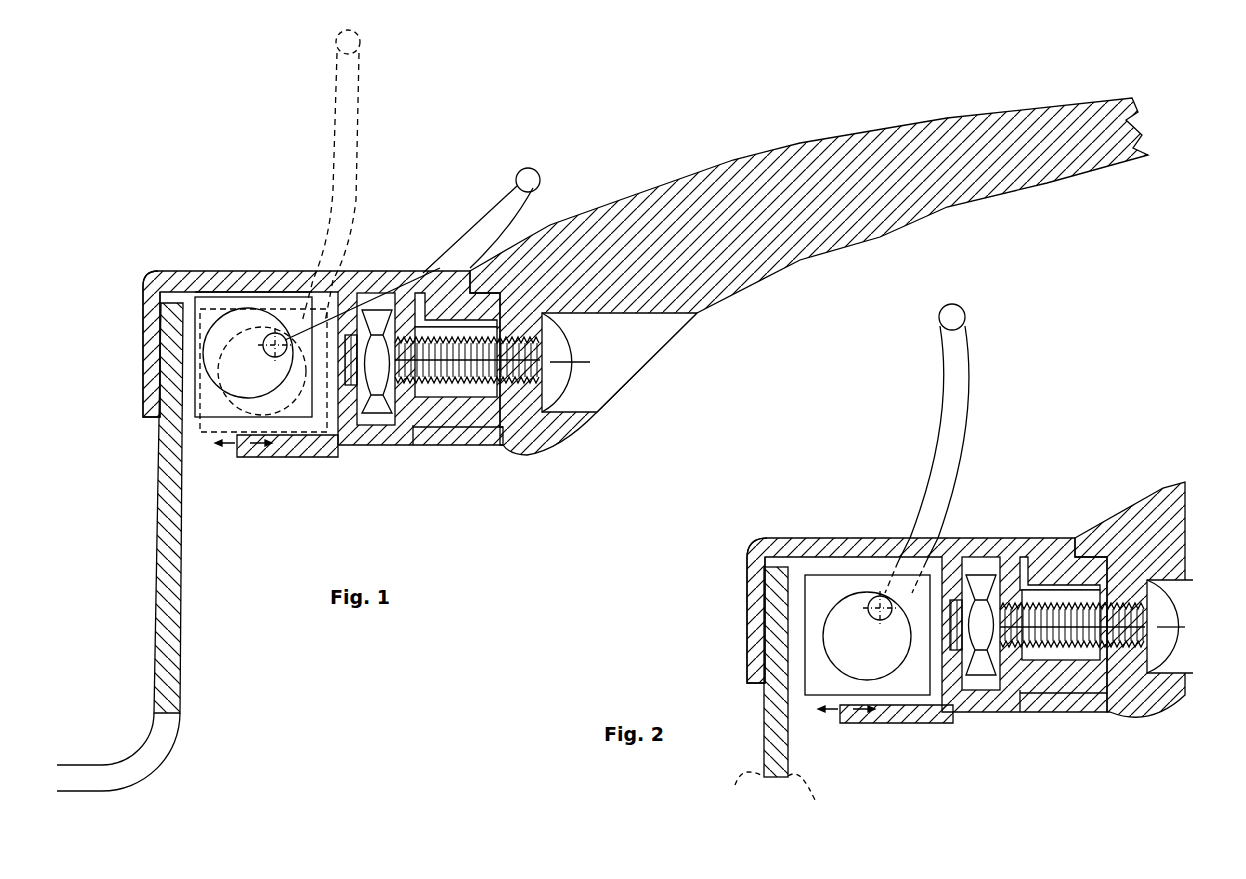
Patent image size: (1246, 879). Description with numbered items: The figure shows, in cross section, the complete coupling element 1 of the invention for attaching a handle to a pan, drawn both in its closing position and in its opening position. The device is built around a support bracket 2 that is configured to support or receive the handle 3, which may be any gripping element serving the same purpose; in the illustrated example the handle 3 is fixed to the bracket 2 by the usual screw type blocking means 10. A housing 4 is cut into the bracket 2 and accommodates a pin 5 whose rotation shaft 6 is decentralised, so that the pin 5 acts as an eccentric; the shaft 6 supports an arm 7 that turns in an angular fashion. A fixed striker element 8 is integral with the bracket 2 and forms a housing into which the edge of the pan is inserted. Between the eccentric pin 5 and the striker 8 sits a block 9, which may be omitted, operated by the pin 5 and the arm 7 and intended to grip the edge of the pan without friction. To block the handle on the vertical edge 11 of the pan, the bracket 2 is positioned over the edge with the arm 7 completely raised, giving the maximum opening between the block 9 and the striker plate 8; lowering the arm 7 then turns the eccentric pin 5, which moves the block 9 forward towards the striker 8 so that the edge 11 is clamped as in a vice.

In FIG. 1, the coupling element 1 is at (250, 263).
In FIG. 2, the coupling element 1 is at (853, 522).
In FIG. 1, the support bracket 2 is at (348, 412).
In FIG. 2, the support bracket 2 is at (945, 715).
In FIG. 1, the handle 3 is at (722, 208).
In FIG. 2, the handle 3 is at (1107, 547).
In FIG. 1, the housing 4 is at (318, 300).
In FIG. 1, the pin 5 is at (215, 342).
In FIG. 2, the pin 5 is at (838, 622).
In FIG. 1, the rotation shaft 6 is at (287, 335).
In FIG. 1, the arm 7 is at (462, 237).
In FIG. 2, the arm 7 is at (962, 369).
In FIG. 1, the fixed striker element 8 is at (150, 333).
In FIG. 2, the fixed striker element 8 is at (757, 598).
In FIG. 1, the block 9 is at (198, 408).
In FIG. 2, the block 9 is at (808, 658).
In FIG. 1, the screw type blocking means 10 is at (448, 400).
In FIG. 2, the screw type blocking means 10 is at (1065, 650).
In FIG. 1, the vertical edge 11 is at (168, 588).